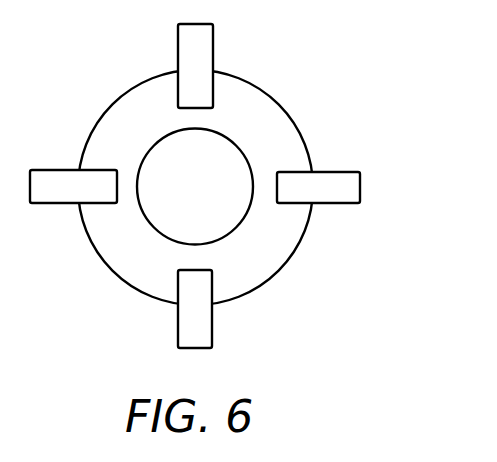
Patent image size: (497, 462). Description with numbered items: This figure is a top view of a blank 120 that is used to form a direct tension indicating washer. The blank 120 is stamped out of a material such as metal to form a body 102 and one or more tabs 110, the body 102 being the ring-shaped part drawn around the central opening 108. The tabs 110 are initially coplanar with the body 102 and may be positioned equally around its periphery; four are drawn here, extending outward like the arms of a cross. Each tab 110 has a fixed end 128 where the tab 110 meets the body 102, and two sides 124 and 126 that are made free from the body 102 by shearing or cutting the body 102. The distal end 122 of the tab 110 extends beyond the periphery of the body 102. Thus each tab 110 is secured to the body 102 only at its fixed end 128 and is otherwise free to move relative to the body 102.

The body 102 is at (275, 125).
The central opening 108 is at (158, 142).
The tab 110 is at (338, 172).
The blank 120 is at (135, 317).
The distal end 122 is at (197, 348).
The side 124 is at (212, 322).
The side 126 is at (177, 335).
The fixed end 128 is at (193, 267).